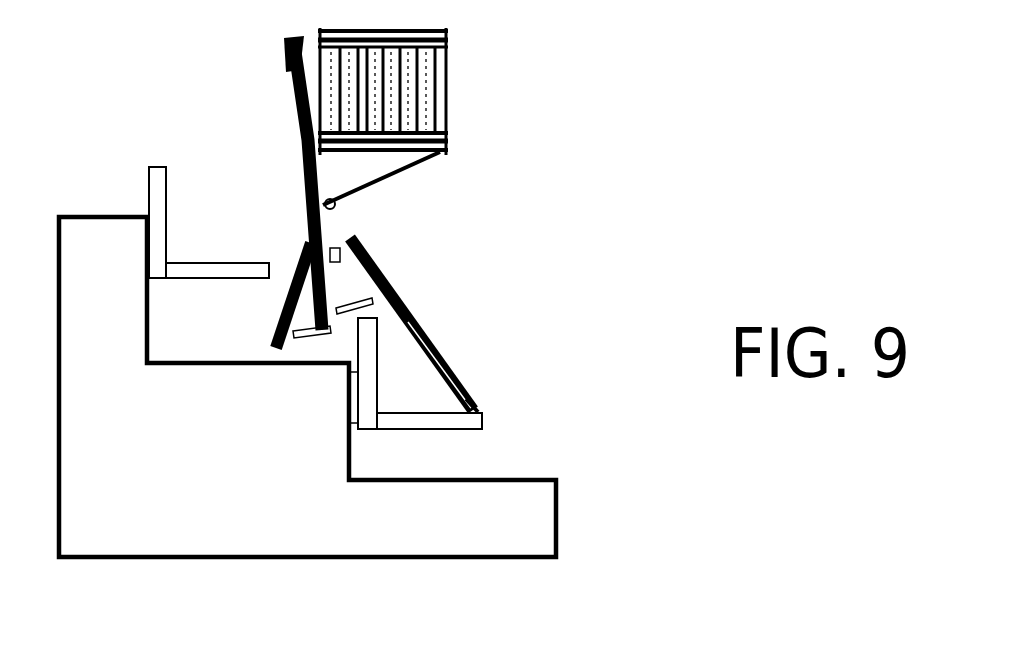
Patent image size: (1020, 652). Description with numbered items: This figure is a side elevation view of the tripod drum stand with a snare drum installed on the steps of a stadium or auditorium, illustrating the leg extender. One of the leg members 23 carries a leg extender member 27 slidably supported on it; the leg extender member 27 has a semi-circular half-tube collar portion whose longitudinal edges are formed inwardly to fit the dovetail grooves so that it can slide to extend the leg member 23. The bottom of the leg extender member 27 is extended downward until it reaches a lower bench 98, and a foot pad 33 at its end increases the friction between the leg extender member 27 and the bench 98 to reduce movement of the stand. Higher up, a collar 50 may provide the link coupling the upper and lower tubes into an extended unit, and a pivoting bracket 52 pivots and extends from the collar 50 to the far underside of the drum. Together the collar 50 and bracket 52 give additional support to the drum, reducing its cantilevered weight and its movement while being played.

The leg member 23 is at (373, 263).
The leg extender member 27 is at (463, 378).
The foot pad 33 is at (480, 407).
The collar 50 is at (336, 206).
The pivoting bracket 52 is at (403, 173).
The lower bench 98 is at (485, 419).